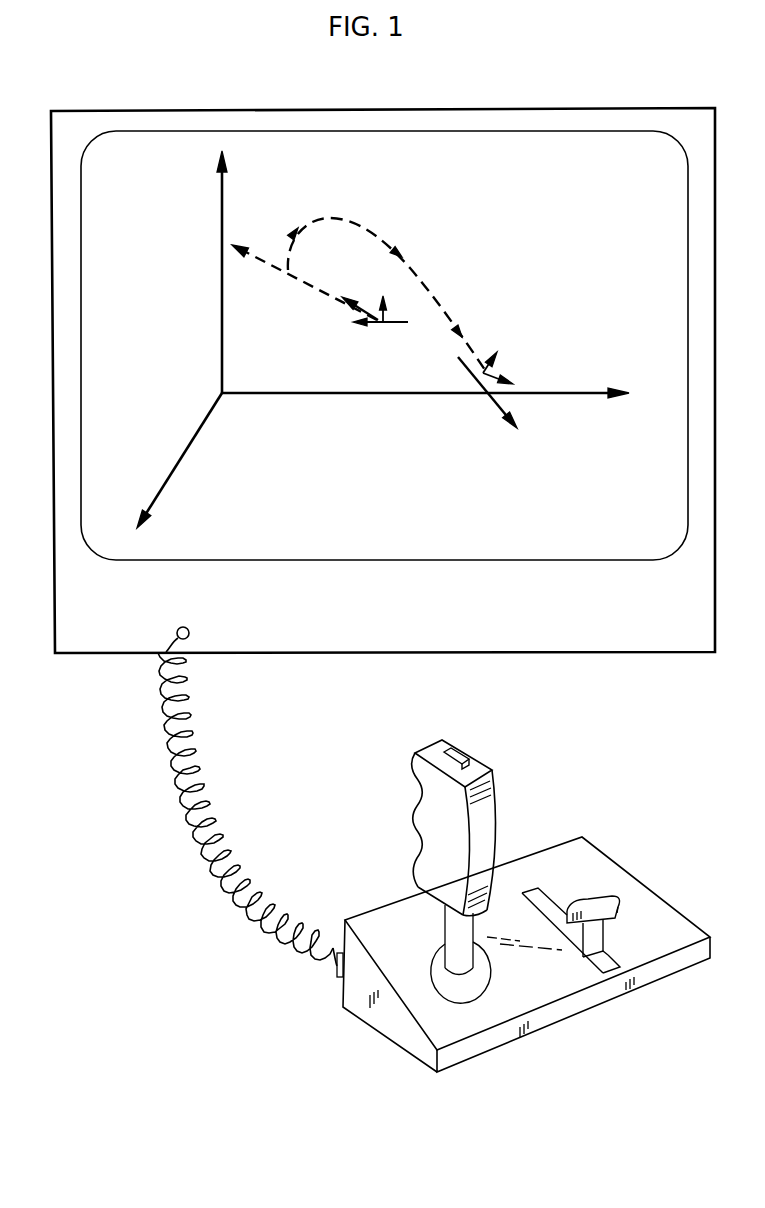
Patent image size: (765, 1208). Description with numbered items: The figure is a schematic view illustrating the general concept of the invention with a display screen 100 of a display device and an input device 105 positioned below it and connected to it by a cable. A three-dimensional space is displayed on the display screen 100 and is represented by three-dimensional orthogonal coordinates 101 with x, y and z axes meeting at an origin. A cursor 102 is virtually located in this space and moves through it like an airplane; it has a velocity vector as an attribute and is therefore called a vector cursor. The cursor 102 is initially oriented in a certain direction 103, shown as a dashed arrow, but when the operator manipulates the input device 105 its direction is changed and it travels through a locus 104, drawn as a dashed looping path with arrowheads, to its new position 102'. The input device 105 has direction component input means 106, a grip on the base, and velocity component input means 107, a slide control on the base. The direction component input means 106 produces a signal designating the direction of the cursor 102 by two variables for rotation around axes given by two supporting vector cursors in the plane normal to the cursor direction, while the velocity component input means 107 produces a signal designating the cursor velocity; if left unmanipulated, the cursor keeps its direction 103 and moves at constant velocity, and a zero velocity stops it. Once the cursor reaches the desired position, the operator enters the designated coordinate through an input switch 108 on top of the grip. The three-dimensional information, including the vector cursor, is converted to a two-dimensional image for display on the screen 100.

The display screen 100 is at (636, 131).
The three-dimensional orthogonal coordinates 101 is at (176, 458).
The cursor 102 is at (357, 337).
The cursor 102' is at (529, 390).
The direction 103 is at (236, 242).
The locus 104 is at (437, 296).
The input device 105 is at (585, 852).
The direction component input means 106 is at (488, 812).
The velocity component input means 107 is at (619, 906).
The input switch 108 is at (462, 752).